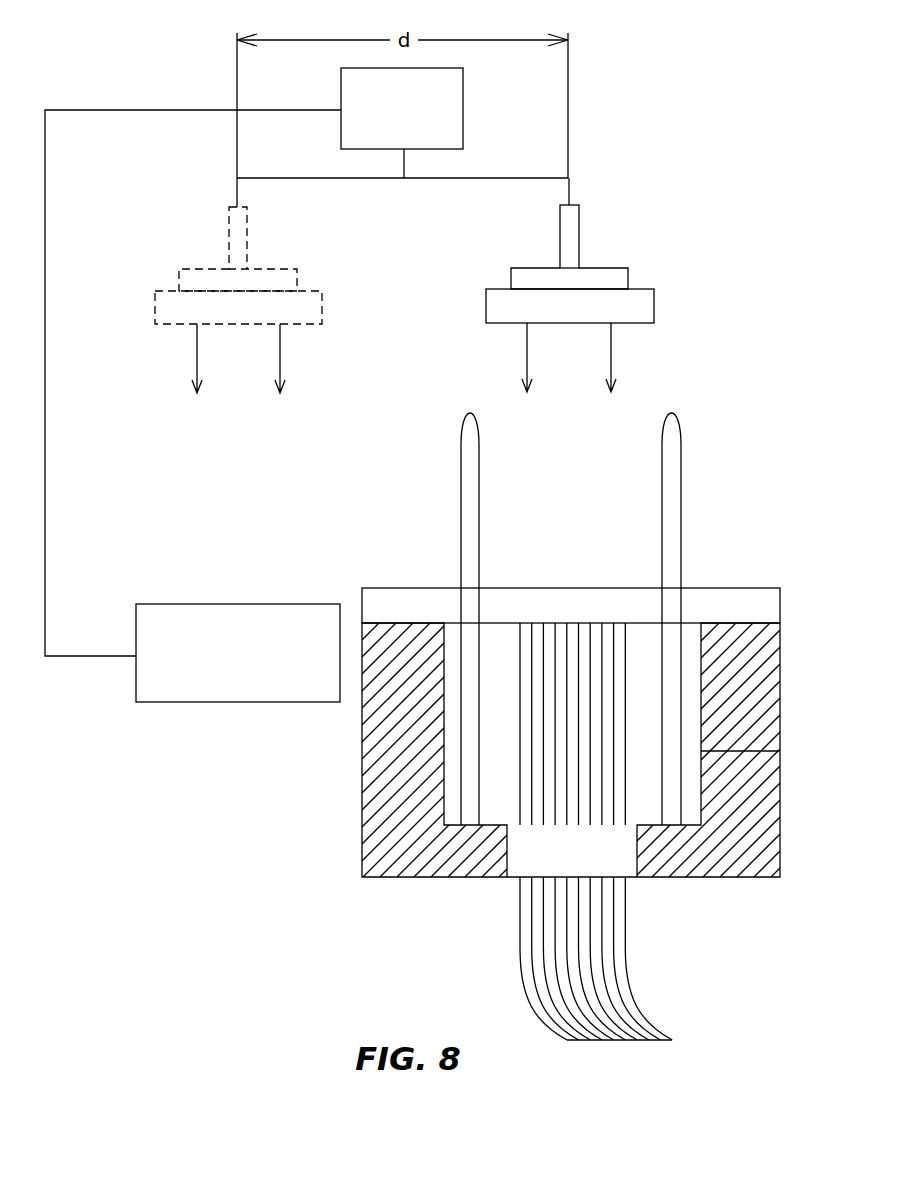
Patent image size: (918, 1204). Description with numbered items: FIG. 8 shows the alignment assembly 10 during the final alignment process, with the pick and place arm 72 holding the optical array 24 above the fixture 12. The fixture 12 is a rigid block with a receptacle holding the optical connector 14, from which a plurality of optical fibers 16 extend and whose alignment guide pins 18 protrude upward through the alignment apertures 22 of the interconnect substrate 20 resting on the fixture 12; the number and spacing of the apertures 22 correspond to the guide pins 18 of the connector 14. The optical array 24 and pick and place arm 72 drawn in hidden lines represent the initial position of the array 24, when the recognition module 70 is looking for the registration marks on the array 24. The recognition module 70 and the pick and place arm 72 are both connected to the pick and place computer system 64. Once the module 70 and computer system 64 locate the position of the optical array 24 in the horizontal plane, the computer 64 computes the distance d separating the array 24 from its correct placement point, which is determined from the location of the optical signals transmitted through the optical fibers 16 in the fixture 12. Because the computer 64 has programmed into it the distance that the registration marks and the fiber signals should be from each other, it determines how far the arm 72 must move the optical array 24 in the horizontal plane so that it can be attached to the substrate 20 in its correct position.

The alignment assembly 10 is at (757, 385).
The fixture 12 is at (781, 693).
The optical connector 14 is at (780, 751).
The optical fibers 16 is at (625, 960).
The alignment guide pins 18 is at (680, 505).
The interconnect substrate 20 is at (395, 588).
The alignment apertures 22 is at (681, 607).
The optical array 24 is at (155, 313).
The pick and place computer system 64 is at (463, 93).
The recognition module 70 is at (288, 702).
The pick and place arm 72 is at (228, 238).